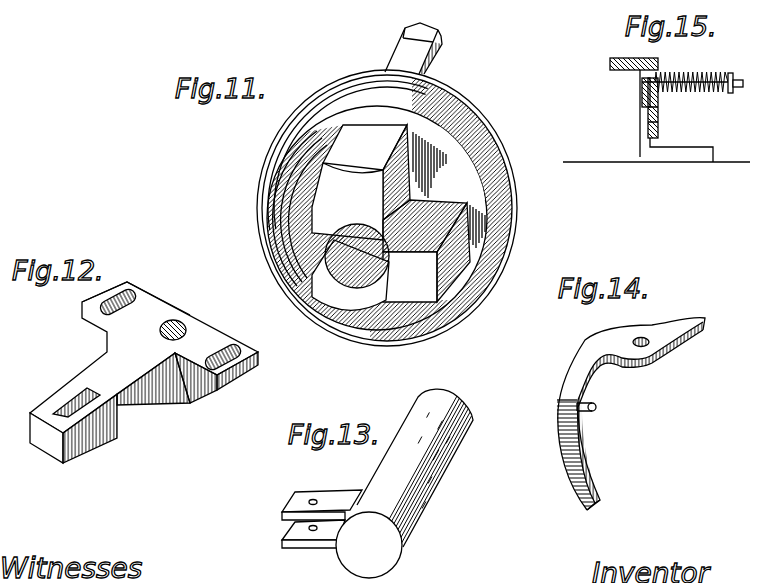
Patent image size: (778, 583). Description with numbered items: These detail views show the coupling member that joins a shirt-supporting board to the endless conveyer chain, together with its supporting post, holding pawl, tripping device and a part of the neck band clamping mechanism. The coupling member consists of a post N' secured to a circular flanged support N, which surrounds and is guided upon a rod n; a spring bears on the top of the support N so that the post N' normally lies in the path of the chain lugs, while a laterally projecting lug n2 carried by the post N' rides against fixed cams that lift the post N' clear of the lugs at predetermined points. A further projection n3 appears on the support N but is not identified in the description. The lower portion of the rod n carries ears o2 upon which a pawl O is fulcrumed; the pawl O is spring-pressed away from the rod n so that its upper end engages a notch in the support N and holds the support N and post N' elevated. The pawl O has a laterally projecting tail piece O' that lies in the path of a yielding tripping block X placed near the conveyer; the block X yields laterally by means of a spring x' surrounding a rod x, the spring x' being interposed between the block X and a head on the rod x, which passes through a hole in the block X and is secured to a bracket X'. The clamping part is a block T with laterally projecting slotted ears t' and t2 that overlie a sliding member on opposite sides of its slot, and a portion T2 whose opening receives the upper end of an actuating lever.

In FIG. 11, the circular flanged support N is at (387, 191).
In FIG. 11, the post N' is at (469, 251).
In FIG. 13, the rod n is at (425, 472).
In FIG. 11, the laterally projecting lug n2 is at (353, 150).
In FIG. 11, the lug on ring n3 is at (430, 33).
In FIG. 12, the block T is at (137, 373).
In FIG. 12, the ear t' is at (136, 282).
In FIG. 12, the ear t2 is at (258, 353).
In FIG. 12, the portion of the block T2 is at (57, 450).
In FIG. 13, the ears o2 is at (325, 503).
In FIG. 14, the pawl O is at (631, 404).
In FIG. 14, the tail piece O' is at (613, 486).
In FIG. 15, the tripping block X is at (652, 89).
In FIG. 15, the bracket X' is at (616, 121).
In FIG. 15, the spring x' is at (688, 65).
In FIG. 15, the rod x is at (744, 94).